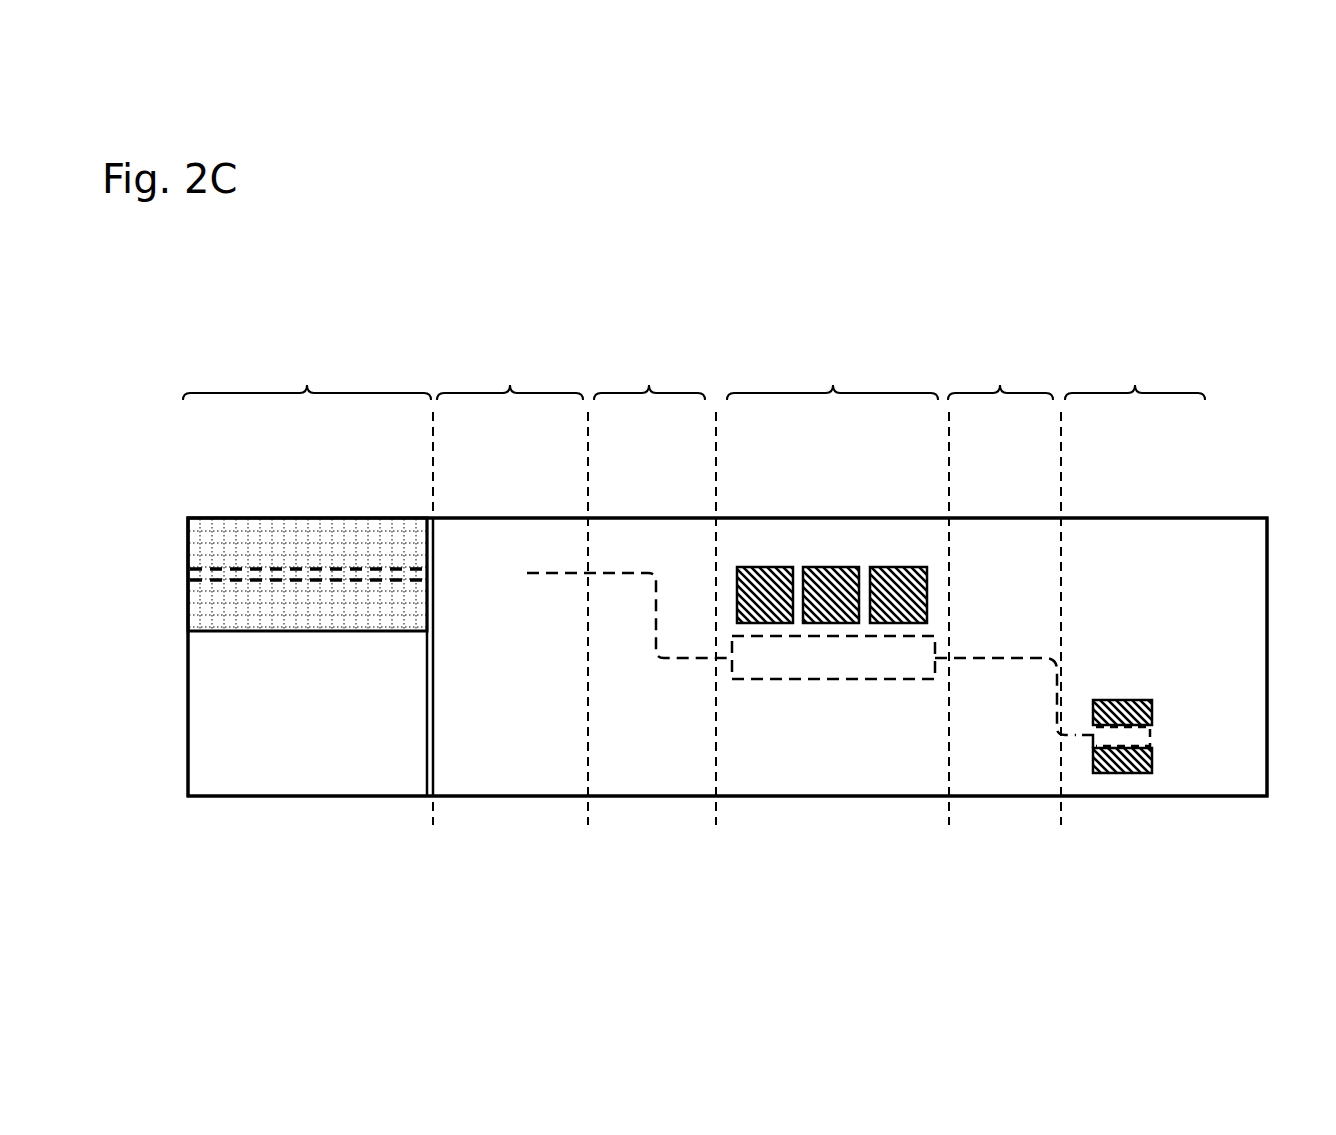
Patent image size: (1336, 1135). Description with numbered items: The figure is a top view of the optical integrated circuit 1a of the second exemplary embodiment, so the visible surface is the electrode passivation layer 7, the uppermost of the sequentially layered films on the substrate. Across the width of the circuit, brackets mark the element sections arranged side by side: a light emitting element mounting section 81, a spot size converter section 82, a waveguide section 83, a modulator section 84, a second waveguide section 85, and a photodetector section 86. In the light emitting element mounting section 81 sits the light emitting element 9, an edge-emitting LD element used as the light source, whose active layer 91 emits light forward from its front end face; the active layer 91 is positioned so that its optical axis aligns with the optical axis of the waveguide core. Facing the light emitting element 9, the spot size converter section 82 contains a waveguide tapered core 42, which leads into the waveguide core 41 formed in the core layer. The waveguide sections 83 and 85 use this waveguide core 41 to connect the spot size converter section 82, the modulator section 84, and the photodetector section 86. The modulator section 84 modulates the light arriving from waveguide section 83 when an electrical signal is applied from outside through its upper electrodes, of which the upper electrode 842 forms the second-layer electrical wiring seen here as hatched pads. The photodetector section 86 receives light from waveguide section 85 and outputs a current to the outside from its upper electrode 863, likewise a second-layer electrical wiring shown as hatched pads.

The optical integrated circuit 1a is at (1100, 227).
The electrode passivation layer 7 is at (1147, 537).
The light emitting element 9 is at (318, 540).
The active layer 91 is at (188, 578).
The waveguide core 41 is at (987, 660).
The waveguide tapered core 42 is at (583, 578).
The light emitting element mounting section 81 is at (307, 377).
The spot size converter section 82 is at (510, 377).
The waveguide section 83 is at (649, 377).
The modulator section 84 is at (832, 377).
The waveguide section 85 is at (1000, 377).
The photodetector section 86 is at (1135, 377).
The upper electrode 842 is at (761, 568).
The upper electrode 863 is at (1140, 773).